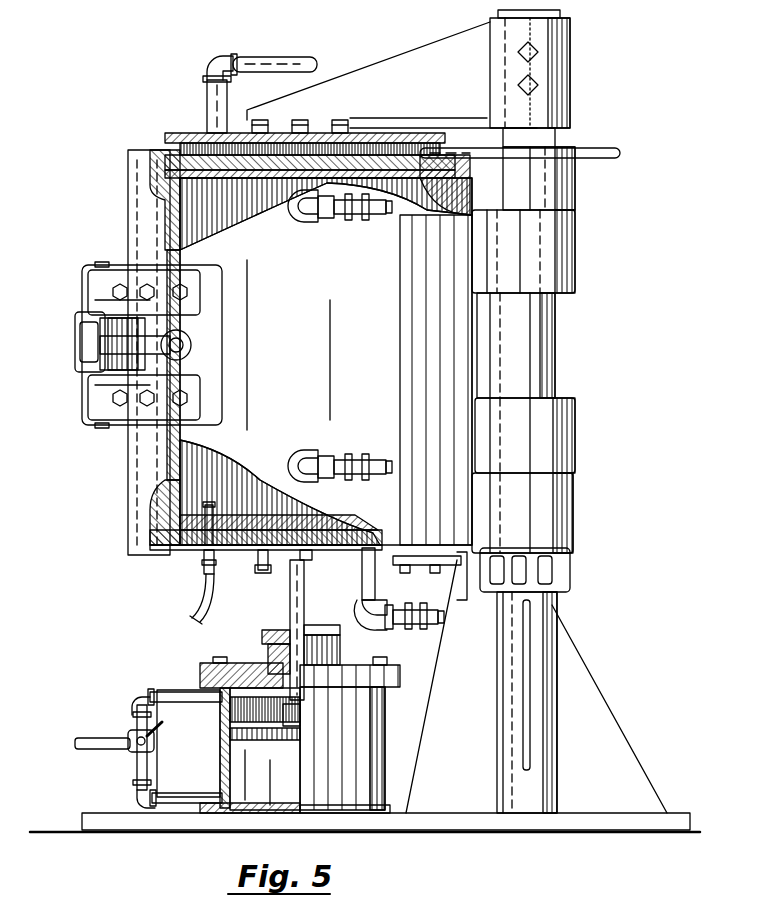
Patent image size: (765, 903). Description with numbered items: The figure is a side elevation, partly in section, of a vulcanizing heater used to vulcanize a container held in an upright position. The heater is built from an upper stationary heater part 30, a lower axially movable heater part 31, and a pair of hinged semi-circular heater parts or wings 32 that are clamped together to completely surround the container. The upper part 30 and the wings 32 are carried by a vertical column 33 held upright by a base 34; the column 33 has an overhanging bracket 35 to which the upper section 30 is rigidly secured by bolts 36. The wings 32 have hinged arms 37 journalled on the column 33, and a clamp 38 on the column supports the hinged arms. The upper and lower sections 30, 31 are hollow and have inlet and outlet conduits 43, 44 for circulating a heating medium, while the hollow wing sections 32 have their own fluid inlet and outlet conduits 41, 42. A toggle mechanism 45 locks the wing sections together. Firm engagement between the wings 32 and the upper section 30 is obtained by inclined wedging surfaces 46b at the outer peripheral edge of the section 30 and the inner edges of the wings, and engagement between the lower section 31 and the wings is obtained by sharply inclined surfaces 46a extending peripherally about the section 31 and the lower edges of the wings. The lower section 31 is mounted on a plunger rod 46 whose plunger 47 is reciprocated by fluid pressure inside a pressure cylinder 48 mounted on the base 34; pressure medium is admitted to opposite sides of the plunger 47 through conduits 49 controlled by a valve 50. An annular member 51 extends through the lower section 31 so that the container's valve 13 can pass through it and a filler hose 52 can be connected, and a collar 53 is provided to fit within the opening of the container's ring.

The valve 13 is at (204, 560).
The upper stationary heater part 30 is at (158, 133).
The lower axially movable heater part 31 is at (176, 550).
The hinged semi-circular heater parts or wings 32 is at (275, 378).
The vertical column 33 is at (556, 340).
The base 34 is at (596, 682).
The overhanging bracket 35 is at (440, 87).
The bolts 36 is at (310, 113).
The hinged arms 37 is at (573, 237).
The clamp 38 is at (572, 576).
The fluid inlet conduit 41 is at (372, 224).
The fluid outlet conduit 42 is at (322, 458).
The inlet conduit 43 is at (262, 58).
The outlet conduit 44 is at (605, 150).
The toggle mechanism 45 is at (75, 345).
The plunger rod 46 is at (290, 606).
The sharply inclined surfaces 46a is at (150, 535).
The inclined wedging surfaces 46b is at (160, 168).
The plunger 47 is at (300, 735).
The pressure cylinder 48 is at (220, 758).
The conduits 49 is at (165, 690).
The valve 50 is at (148, 751).
The annular member 51 is at (233, 550).
The filler hose 52 is at (203, 602).
The collar 53 is at (210, 512).